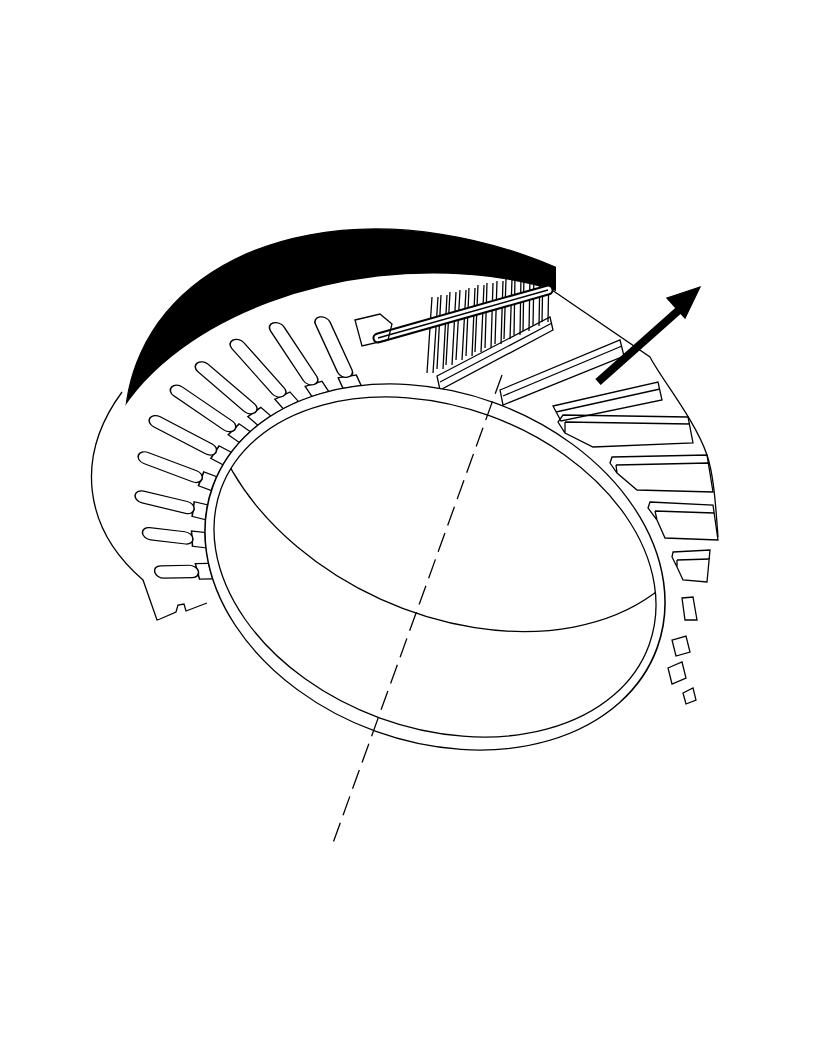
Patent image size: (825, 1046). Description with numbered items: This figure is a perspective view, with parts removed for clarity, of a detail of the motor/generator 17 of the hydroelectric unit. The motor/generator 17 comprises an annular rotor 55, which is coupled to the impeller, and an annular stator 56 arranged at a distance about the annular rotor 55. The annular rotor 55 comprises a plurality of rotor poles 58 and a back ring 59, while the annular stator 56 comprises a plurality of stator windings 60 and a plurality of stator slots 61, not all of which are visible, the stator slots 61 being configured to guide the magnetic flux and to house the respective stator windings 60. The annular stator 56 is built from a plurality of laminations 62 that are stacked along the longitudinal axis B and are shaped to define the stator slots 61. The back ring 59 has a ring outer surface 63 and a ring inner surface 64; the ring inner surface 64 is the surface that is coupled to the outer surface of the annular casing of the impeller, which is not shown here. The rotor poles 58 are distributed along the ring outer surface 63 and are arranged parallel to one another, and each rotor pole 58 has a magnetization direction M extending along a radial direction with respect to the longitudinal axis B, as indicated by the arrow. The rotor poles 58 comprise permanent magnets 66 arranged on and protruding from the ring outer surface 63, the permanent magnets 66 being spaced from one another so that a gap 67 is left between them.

The motor/generator 17 is at (257, 172).
The annular rotor 55 is at (676, 693).
The annular stator 56 is at (395, 203).
The rotor poles 58 is at (742, 522).
The back ring 59 is at (435, 567).
The stator windings 60 is at (558, 295).
The stator slots 61 is at (238, 445).
The laminations 62 is at (538, 262).
The ring outer surface 63 is at (420, 350).
The ring inner surface 64 is at (346, 682).
The permanent magnets 66 is at (695, 570).
The gap 67 is at (596, 464).
The magnetization direction M is at (680, 333).
The longitudinal axis B is at (342, 806).